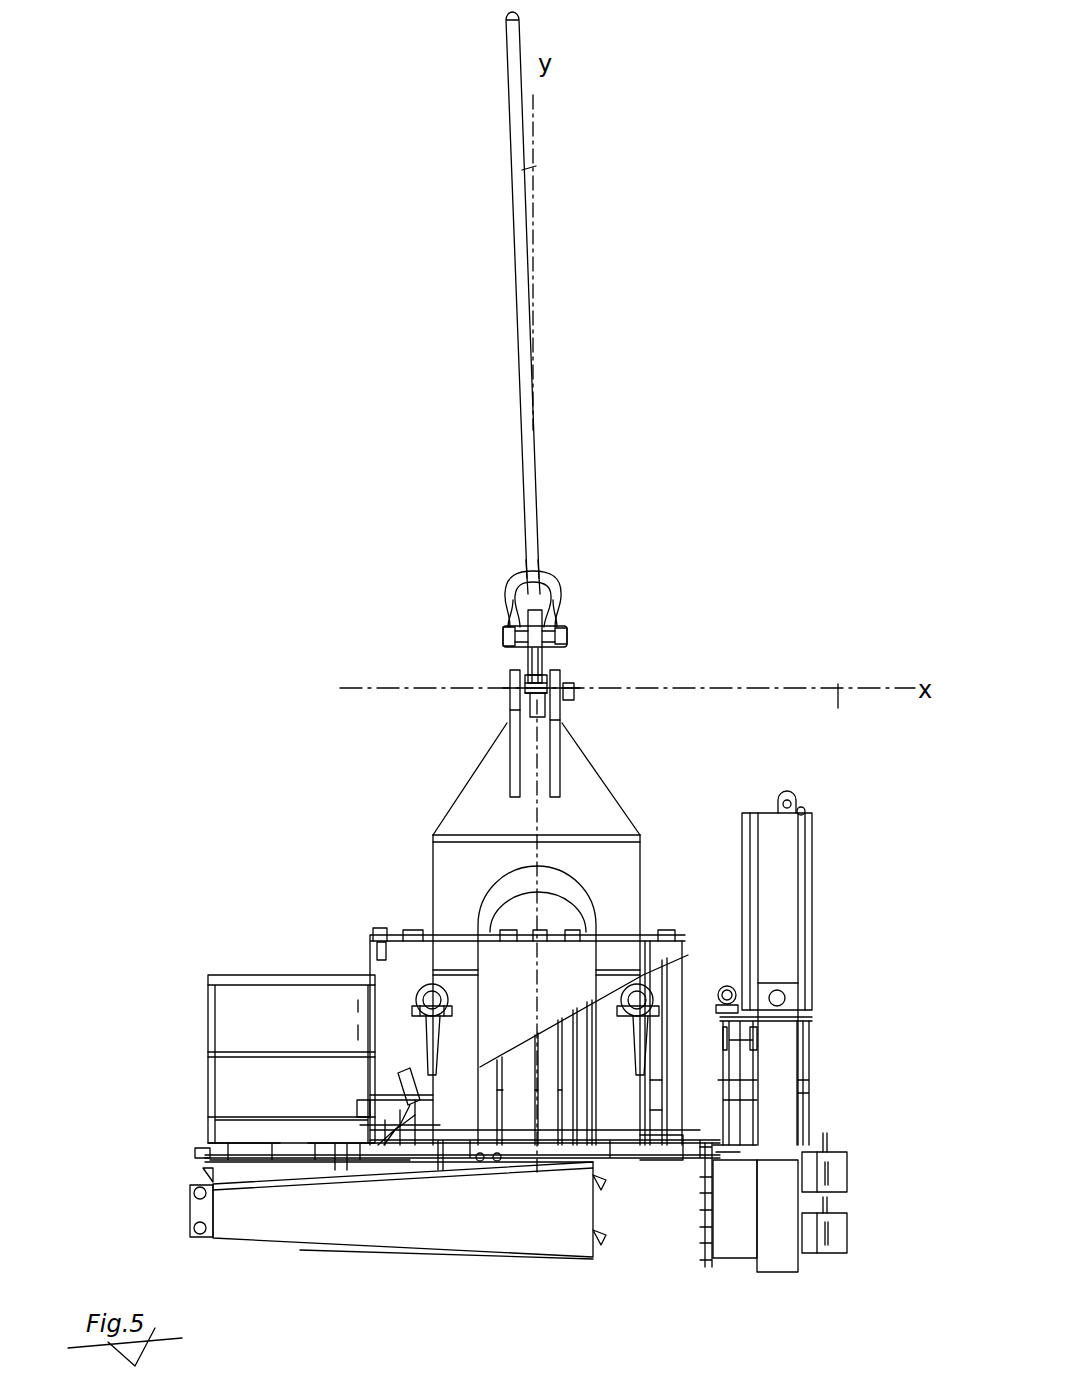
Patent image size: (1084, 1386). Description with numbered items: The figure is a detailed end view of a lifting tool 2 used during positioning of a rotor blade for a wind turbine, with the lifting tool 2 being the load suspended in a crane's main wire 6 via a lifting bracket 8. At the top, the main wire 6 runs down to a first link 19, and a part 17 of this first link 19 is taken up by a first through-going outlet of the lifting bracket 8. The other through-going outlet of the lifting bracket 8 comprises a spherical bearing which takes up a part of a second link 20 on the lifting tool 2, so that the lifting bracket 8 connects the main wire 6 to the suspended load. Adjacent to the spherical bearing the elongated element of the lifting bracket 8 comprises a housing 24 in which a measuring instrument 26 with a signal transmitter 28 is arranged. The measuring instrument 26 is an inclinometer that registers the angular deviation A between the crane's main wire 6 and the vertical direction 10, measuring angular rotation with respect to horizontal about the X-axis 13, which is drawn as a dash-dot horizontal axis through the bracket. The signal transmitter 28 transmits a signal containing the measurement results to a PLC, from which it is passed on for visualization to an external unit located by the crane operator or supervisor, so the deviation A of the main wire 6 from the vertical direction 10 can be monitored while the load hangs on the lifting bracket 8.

The lifting tool 2 is at (700, 734).
The main wire 6 is at (558, 396).
The lifting bracket 8 is at (527, 657).
The vertical direction 10 is at (533, 268).
The X-axis 13 is at (843, 726).
The part of first link 17 is at (566, 640).
The first link 19 is at (586, 589).
The second link 20 is at (592, 714).
The housing 24 is at (543, 657).
The measuring instrument 26 is at (604, 661).
The signal transmitter 28 is at (617, 657).
The angular deviation A is at (524, 172).